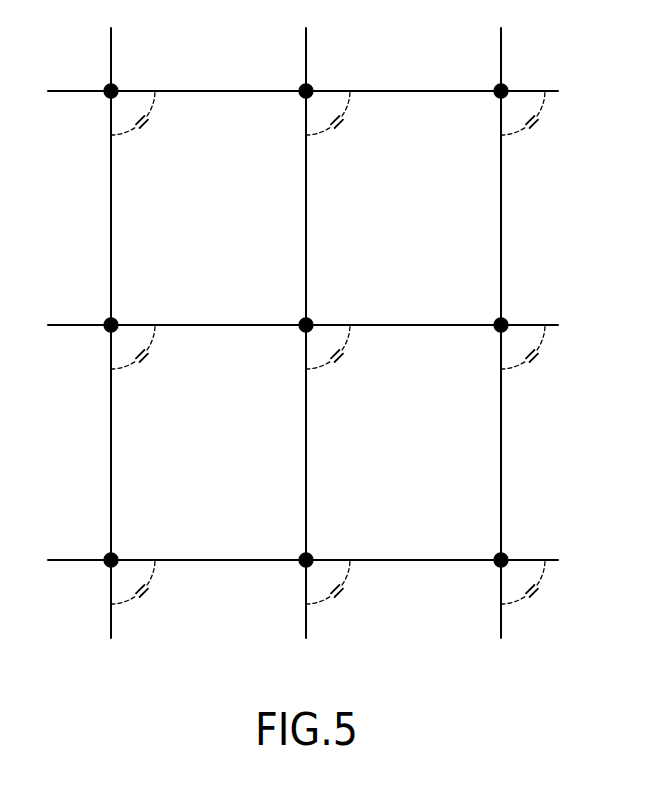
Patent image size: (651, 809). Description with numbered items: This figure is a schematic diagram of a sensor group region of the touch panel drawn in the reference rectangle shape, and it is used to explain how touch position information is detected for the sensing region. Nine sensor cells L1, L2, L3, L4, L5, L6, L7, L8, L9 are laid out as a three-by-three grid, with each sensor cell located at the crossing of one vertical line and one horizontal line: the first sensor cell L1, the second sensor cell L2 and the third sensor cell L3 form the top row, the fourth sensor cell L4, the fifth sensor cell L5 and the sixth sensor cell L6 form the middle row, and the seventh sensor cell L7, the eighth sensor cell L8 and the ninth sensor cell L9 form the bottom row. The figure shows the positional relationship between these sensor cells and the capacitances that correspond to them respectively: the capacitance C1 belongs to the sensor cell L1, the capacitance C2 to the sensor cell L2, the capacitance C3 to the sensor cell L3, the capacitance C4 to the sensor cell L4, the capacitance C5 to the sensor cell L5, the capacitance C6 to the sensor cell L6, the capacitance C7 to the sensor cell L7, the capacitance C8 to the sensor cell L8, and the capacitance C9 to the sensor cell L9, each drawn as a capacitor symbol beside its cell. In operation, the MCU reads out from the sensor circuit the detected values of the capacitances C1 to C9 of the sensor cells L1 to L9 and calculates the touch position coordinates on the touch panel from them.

The sensor cell L1 is at (111, 91).
The sensor cell L2 is at (306, 91).
The sensor cell L3 is at (501, 91).
The sensor cell L4 is at (111, 325).
The sensor cell L5 is at (306, 325).
The sensor cell L6 is at (501, 325).
The sensor cell L7 is at (111, 560).
The sensor cell L8 is at (306, 560).
The sensor cell L9 is at (501, 560).
The capacitance C1 is at (144, 126).
The capacitance C2 is at (339, 126).
The capacitance C3 is at (534, 126).
The capacitance C4 is at (144, 360).
The capacitance C5 is at (339, 360).
The capacitance C6 is at (534, 360).
The capacitance C7 is at (144, 595).
The capacitance C8 is at (339, 595).
The capacitance C9 is at (534, 595).